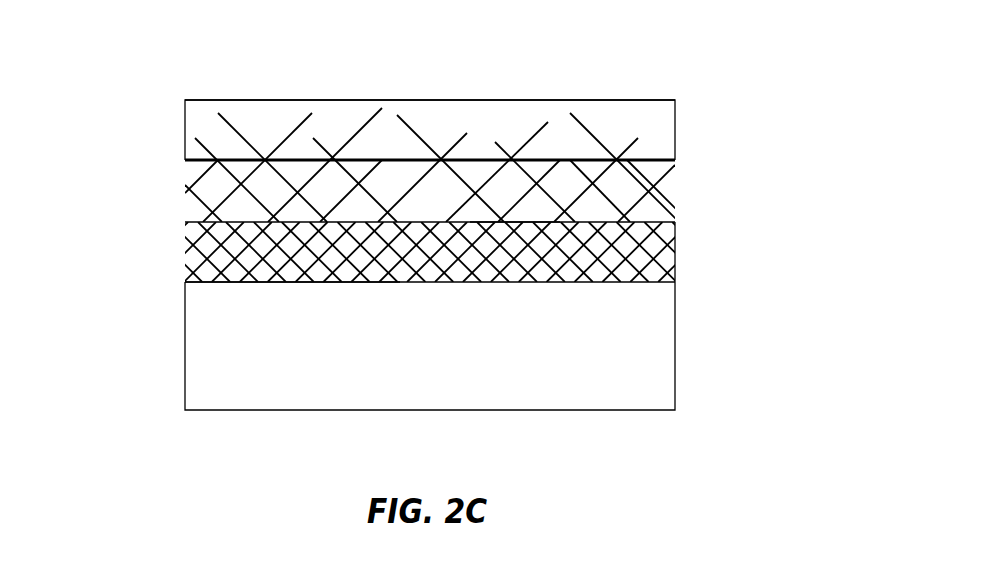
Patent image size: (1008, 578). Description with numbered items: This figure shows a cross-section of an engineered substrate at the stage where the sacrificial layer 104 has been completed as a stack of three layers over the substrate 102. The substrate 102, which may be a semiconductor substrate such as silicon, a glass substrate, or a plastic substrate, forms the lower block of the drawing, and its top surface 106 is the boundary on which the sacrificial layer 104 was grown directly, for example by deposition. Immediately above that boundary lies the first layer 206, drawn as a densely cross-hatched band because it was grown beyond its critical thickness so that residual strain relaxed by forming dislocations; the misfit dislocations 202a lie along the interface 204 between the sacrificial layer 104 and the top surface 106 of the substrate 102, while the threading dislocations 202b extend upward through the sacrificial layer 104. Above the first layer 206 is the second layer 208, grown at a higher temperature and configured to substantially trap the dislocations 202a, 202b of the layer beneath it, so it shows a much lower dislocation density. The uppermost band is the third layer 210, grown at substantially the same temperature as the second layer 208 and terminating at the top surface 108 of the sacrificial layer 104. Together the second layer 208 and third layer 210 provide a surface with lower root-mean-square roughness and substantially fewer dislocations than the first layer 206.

The substrate 102 is at (207, 342).
The sacrificial layer 104 is at (176, 221).
The top surface of the substrate 106 is at (378, 283).
The top surface of the sacrificial layer 108 is at (338, 98).
The misfit dislocations 202a is at (287, 283).
The threading dislocations 202b is at (508, 238).
The interface 204 is at (677, 283).
The first layer 206 is at (199, 256).
The second layer 208 is at (199, 176).
The third layer 210 is at (199, 112).